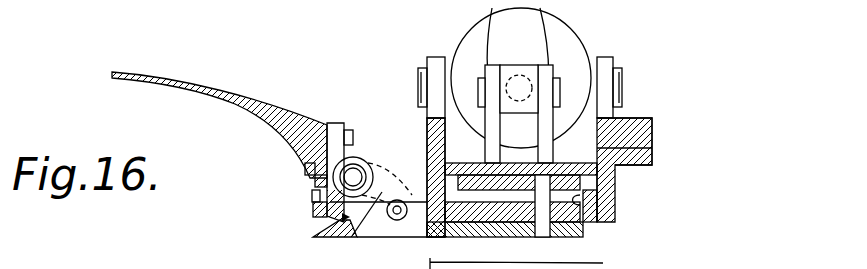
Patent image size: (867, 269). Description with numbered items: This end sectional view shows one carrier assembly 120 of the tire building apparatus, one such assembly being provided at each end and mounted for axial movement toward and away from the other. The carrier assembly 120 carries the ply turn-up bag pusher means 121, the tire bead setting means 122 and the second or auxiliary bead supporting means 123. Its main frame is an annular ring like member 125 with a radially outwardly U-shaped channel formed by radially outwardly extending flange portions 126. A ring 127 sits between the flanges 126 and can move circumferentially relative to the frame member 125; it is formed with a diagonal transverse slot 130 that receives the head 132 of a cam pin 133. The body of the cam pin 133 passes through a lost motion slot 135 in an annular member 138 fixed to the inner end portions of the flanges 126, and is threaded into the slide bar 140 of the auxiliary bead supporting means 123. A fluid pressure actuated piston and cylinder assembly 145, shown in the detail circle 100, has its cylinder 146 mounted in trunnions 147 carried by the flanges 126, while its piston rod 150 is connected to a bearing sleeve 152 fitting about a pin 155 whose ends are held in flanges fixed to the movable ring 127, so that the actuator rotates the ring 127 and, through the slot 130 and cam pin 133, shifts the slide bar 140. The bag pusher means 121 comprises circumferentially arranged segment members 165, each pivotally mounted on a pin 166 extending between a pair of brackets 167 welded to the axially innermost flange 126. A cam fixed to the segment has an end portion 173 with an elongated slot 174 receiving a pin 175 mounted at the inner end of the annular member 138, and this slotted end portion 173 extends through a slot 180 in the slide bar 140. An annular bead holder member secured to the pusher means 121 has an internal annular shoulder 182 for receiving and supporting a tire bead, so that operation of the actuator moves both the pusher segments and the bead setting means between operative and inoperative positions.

The rail clamp assembly 100 is at (521, 74).
The carrier assembly 120 is at (654, 75).
The ply turn-up bag pusher means 121 is at (286, 98).
The tire bead setting means 122 is at (592, 234).
The second or auxiliary bead supporting means 123 is at (302, 208).
The annular ring like member 125 is at (668, 126).
The flange portions 126 is at (428, 121).
The ring 127 is at (652, 148).
The slot 130 is at (535, 178).
The head 132 is at (637, 108).
The cam pin 133 is at (543, 235).
The lost motion slot 135 is at (613, 206).
The annular member 138 is at (623, 226).
The slide bar 140 is at (433, 237).
The fluid pressure actuated piston and cylinder assembly 145 is at (583, 32).
The cylinder 146 is at (525, 43).
The trunnions 147 is at (432, 58).
The piston rod 150 is at (524, 72).
The bearing sleeve 152 is at (428, 140).
The pin 155 is at (473, 90).
The segment members 165 is at (222, 92).
The pin 166 is at (353, 177).
The brackets 167 is at (366, 157).
The end portion 173 is at (387, 222).
The elongated slot 174 is at (355, 227).
The pin 175 is at (417, 197).
The slot 180 is at (308, 188).
The internal annular shoulder 182 is at (312, 217).